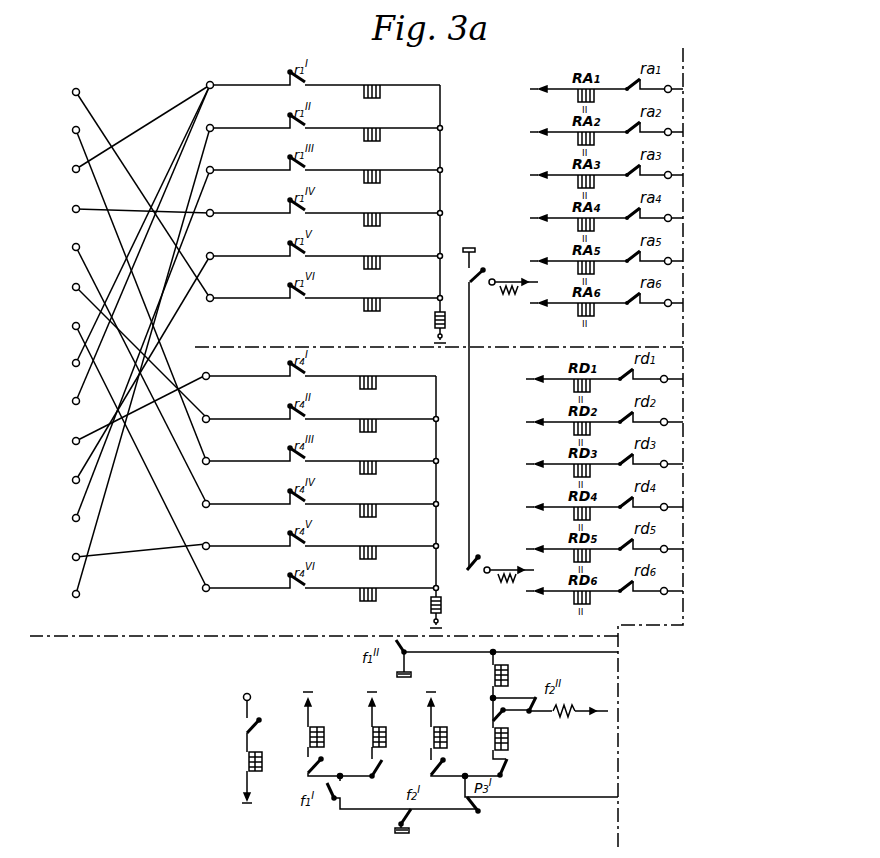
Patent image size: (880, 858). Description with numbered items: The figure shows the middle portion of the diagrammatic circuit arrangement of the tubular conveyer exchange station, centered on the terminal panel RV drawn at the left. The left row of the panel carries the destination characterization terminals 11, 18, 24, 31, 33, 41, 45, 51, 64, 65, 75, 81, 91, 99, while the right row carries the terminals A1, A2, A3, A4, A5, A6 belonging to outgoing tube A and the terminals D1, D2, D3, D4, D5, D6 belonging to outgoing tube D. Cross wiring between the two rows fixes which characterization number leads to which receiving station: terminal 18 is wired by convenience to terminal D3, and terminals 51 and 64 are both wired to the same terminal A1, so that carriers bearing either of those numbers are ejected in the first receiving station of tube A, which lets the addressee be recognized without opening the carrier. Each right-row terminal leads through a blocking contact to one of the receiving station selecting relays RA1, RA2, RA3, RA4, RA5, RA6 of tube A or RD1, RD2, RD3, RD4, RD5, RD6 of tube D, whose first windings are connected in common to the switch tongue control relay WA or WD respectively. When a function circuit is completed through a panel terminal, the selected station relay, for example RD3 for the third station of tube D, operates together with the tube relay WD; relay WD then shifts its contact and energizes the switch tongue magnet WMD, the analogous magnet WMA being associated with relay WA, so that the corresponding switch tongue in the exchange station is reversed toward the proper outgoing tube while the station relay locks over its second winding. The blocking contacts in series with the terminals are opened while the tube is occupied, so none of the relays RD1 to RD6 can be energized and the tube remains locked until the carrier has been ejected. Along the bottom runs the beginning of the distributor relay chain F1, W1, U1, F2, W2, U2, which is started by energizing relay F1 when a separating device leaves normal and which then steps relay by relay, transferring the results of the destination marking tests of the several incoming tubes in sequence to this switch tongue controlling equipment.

The selector terminal 11 is at (130, 184).
The terminal 18 is at (126, 286).
The selector terminal 24 is at (127, 129).
The selector terminal 31 is at (127, 204).
The selector terminal 33 is at (125, 367).
The selector terminal 41 is at (125, 345).
The selector terminal 45 is at (124, 449).
The terminal 51 is at (126, 228).
The terminal 64 is at (126, 247).
The selector terminal 65 is at (124, 412).
The selector terminal 75 is at (126, 372).
The selector terminal 81 is at (125, 348).
The selector terminal 91 is at (123, 555).
The selector terminal 99 is at (124, 365).
The terminal panel RV is at (136, 86).
The terminal A1 is at (324, 76).
The contact A2 is at (324, 119).
The contact A3 is at (324, 161).
The contact A4 is at (324, 204).
The contact A5 is at (324, 247).
The contact A6 is at (324, 289).
The contact D1 is at (320, 367).
The contact D2 is at (320, 410).
The contact D3 is at (320, 452).
The contact D4 is at (320, 495).
The contact D5 is at (320, 537).
The contact D6 is at (320, 579).
The switch tongue control relay RA1 is at (372, 89).
The switch tongue control relay RA2 is at (372, 132).
The switch tongue control relay RA3 is at (372, 174).
The switch tongue control relay RA4 is at (372, 217).
The switch tongue control relay RA5 is at (372, 260).
The relay RA6 is at (372, 302).
The switch tongue control relay RD1 is at (368, 380).
The switch tongue control relay RD2 is at (368, 423).
The switch tongue control relay RD3 is at (368, 465).
The switch tongue control relay RD4 is at (368, 508).
The switch tongue control relay RD5 is at (368, 550).
The switch tongue control relay RD6 is at (368, 592).
The switch tongue control relay WA is at (427, 327).
The switch tongue control relay WD is at (423, 612).
The relay WMA is at (500, 408).
The switch tongue magnet WMD is at (500, 570).
The distributor chain relay F1 is at (263, 738).
The distributor chain relay F2 is at (514, 675).
The chain relay W1 is at (326, 735).
The chain relay W2 is at (463, 735).
The chain relay U1 is at (374, 738).
The chain relay U2 is at (496, 742).